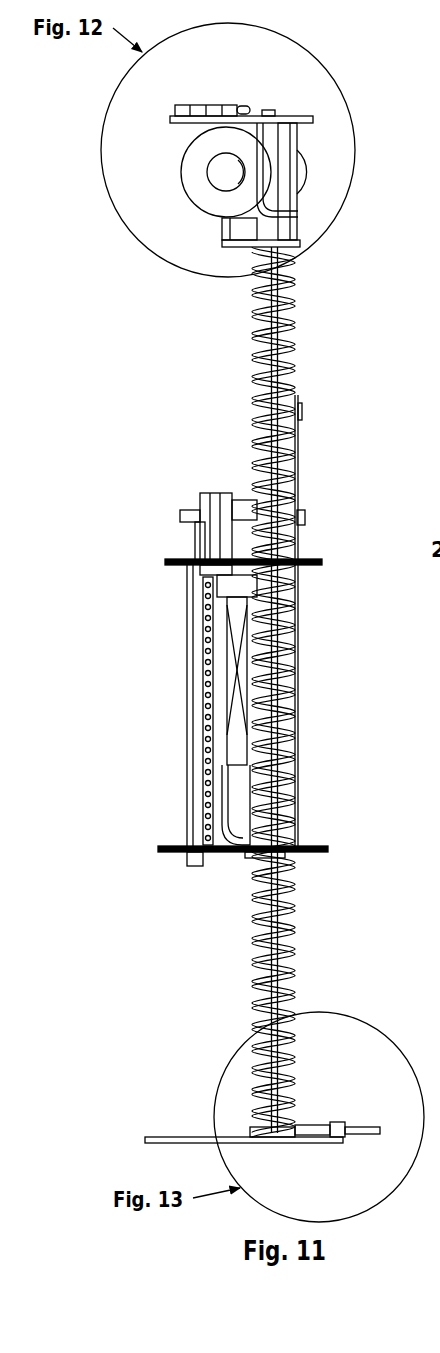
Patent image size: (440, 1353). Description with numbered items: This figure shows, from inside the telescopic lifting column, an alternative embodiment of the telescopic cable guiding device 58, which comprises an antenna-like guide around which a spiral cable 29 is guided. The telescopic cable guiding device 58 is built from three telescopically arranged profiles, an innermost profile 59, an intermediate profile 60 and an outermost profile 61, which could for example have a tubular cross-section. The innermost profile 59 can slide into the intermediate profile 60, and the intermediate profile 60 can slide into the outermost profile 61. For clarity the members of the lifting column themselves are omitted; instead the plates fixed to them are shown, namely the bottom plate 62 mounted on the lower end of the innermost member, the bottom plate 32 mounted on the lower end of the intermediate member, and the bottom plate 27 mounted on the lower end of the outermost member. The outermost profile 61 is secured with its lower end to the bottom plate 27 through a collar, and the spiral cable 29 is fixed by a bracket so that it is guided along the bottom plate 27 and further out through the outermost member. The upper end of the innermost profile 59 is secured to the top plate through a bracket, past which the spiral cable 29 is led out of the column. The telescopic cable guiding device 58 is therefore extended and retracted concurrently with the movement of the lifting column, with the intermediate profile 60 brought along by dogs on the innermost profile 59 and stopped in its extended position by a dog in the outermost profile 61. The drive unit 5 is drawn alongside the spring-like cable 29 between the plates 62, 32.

The telescopic cable guiding device 58 is at (212, 336).
The spiral cable 29 is at (296, 288).
The innermost profile 59 is at (278, 346).
The intermediate profile 60 is at (283, 700).
The outermost profile 61 is at (288, 960).
The bottom plate 62 is at (165, 562).
The frame unit 5 is at (177, 692).
The bottom plate 32 is at (163, 848).
The bottom plate 27 is at (145, 1139).